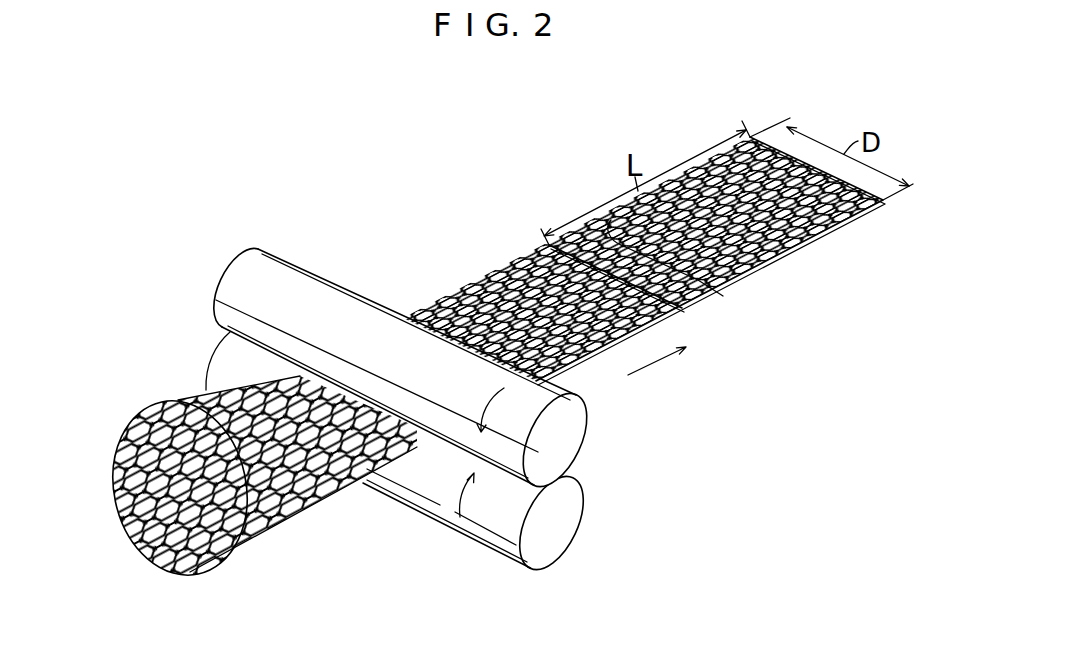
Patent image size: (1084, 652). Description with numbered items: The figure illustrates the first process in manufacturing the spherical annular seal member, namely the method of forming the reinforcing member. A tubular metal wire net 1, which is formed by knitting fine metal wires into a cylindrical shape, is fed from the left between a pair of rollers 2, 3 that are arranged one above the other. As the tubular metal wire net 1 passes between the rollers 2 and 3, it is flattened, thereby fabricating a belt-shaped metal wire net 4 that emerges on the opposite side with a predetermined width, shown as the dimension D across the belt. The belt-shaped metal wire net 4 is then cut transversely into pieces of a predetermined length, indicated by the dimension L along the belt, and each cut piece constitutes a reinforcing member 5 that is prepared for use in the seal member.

The tubular metal wire net 1 is at (178, 398).
The roller 2 is at (581, 417).
The roller 3 is at (578, 495).
The belt-shaped metal wire net 4 is at (486, 285).
The reinforcing member 5 is at (692, 306).